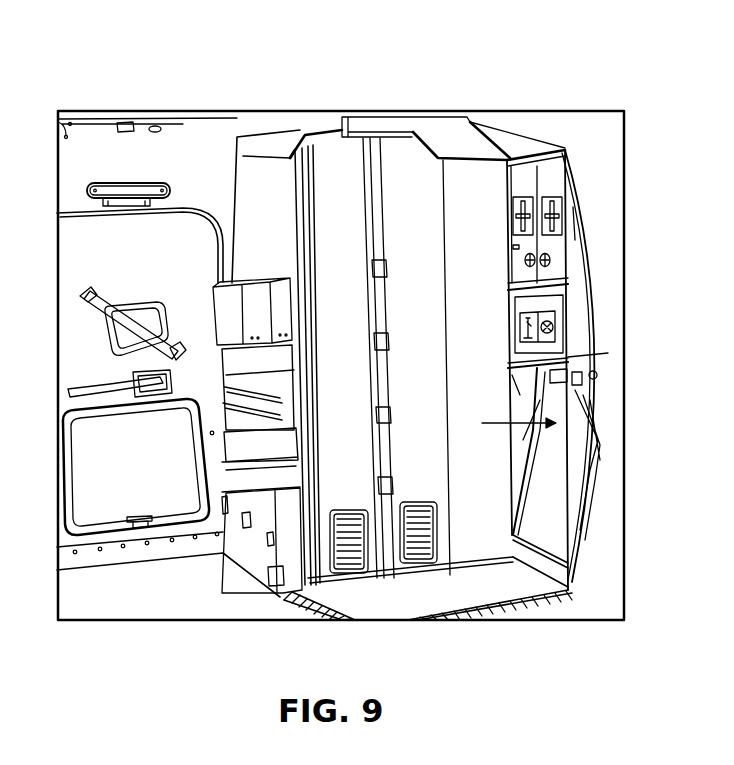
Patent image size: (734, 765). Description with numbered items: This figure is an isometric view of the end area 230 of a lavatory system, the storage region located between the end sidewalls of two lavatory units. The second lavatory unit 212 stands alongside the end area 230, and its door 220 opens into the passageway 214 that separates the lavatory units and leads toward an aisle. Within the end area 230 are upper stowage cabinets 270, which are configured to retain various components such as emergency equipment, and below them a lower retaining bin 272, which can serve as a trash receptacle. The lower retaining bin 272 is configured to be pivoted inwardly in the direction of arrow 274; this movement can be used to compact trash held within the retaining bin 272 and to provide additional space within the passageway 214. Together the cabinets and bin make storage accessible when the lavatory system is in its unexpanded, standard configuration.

The second lavatory unit 212 is at (318, 122).
The door 220 is at (413, 172).
The upper stowage cabinets 270 is at (545, 175).
The end area 230 is at (604, 262).
The lower retaining bin 272 is at (590, 463).
The arrow 274 is at (530, 438).
The passageway 214 is at (298, 597).